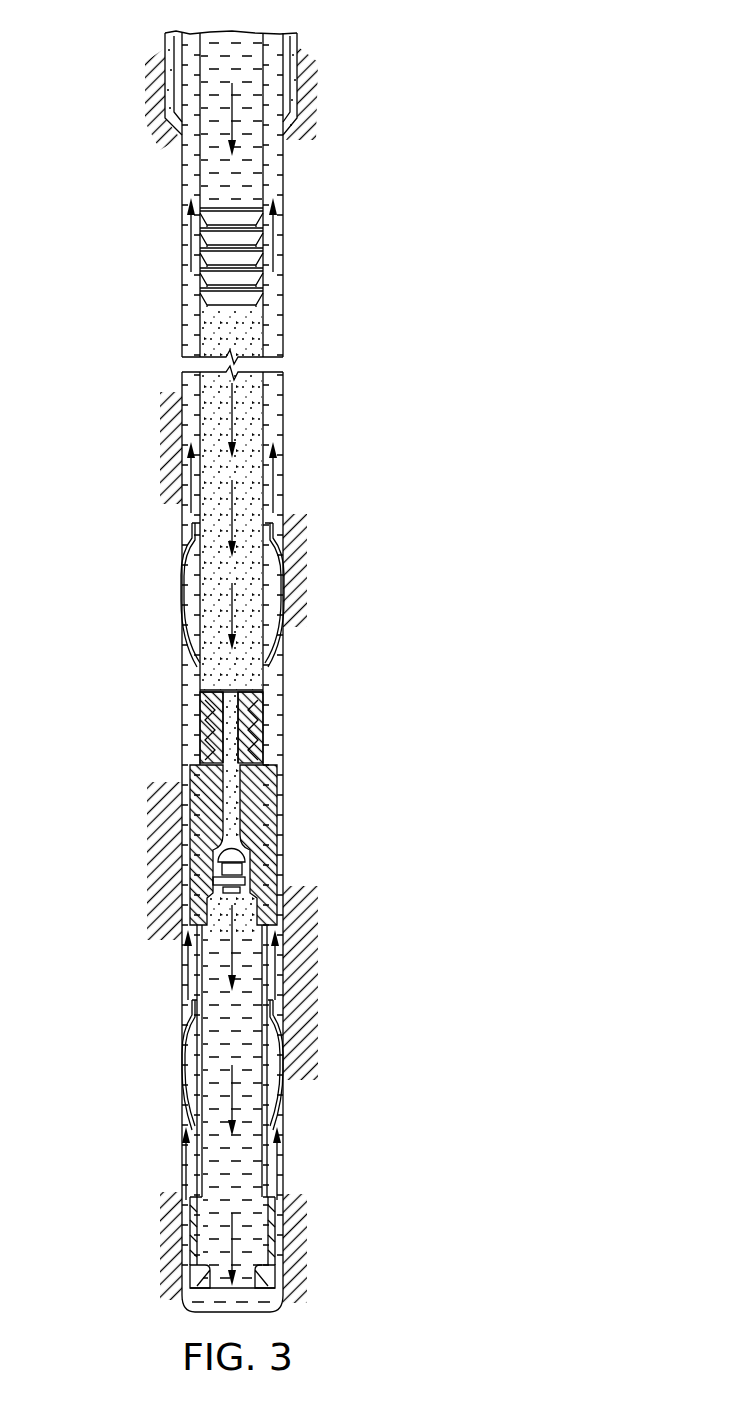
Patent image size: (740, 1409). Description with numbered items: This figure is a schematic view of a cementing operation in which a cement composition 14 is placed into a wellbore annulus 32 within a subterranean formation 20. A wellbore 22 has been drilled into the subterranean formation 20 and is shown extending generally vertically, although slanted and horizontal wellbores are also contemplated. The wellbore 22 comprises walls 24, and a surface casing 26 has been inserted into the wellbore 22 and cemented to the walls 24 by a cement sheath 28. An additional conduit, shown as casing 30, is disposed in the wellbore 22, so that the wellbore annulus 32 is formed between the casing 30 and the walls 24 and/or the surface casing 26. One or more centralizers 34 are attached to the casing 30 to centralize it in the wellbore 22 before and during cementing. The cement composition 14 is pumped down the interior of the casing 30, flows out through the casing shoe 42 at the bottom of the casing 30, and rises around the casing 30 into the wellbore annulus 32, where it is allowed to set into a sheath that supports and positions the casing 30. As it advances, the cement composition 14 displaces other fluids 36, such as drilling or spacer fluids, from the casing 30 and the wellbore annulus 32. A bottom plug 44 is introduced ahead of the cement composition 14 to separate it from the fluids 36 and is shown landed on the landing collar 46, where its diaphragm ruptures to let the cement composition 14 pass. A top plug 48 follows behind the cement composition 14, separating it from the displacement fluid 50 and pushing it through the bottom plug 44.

The cement composition 14 is at (233, 407).
The subterranean formation 20 is at (396, 711).
The wellbore 22 is at (290, 541).
The walls 24 is at (266, 300).
The surface casing 26 is at (295, 43).
The cement sheath 28 is at (303, 67).
The casing 30 is at (264, 438).
The wellbore annulus 32 is at (190, 518).
The centralizers 34 is at (183, 1050).
The fluids 36 is at (232, 925).
The casing shoe 42 is at (188, 1222).
The bottom plug 44 is at (202, 712).
The landing collar 46 is at (190, 787).
The top plug 48 is at (202, 277).
The displacement fluid 50 is at (232, 108).